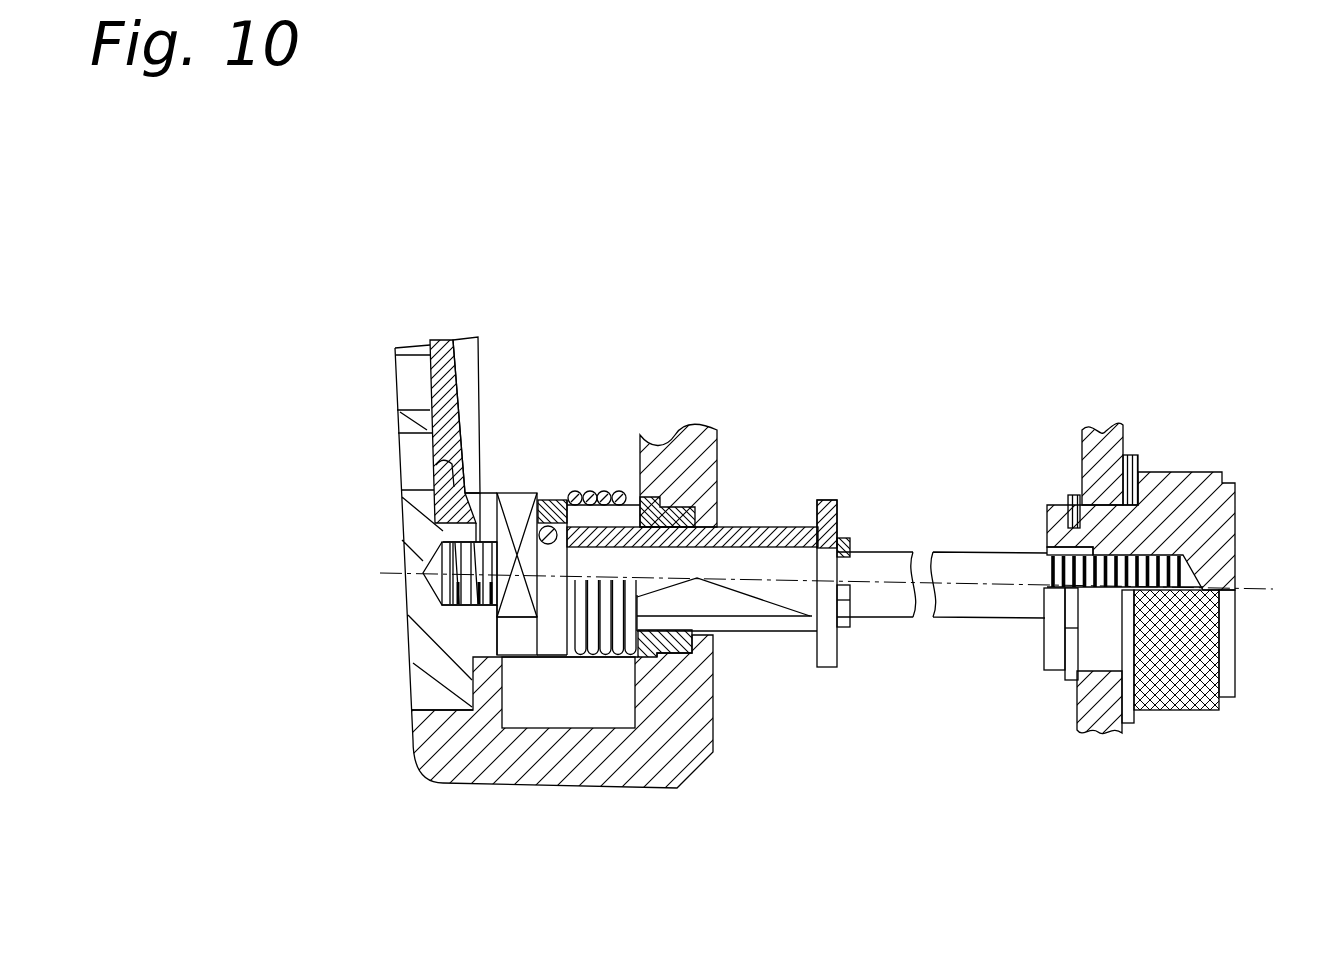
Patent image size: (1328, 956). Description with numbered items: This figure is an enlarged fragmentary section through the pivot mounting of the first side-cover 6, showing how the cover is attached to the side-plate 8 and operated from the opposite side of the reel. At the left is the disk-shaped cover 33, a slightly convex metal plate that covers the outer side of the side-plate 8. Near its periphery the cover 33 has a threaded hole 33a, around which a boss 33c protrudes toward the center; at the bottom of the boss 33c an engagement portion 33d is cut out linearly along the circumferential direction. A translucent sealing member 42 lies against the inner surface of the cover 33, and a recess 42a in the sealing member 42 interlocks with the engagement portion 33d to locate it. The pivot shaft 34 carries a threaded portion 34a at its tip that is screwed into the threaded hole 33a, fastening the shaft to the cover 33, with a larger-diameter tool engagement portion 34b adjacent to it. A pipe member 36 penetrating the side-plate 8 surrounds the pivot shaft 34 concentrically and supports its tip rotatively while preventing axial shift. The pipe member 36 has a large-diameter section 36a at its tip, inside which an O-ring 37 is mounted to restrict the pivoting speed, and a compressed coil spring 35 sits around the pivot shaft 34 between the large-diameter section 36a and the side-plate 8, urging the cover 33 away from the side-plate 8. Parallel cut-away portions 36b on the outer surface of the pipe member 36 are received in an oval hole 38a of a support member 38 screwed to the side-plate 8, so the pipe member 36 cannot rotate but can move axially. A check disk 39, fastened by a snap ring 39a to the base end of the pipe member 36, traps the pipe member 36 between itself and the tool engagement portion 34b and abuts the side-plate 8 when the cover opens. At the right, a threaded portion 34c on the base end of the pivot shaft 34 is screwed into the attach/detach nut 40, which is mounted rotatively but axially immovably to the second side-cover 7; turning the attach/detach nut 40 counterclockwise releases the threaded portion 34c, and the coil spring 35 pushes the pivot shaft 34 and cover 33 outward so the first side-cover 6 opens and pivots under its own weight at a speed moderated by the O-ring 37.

The first side-cover 6 is at (384, 534).
The second side-cover 7 is at (1112, 724).
The side-plate 8 is at (678, 447).
The cover 33 is at (423, 412).
The threaded hole 33a is at (475, 612).
The boss 33c is at (492, 512).
The engagement portion 33d is at (432, 464).
The pivot shaft 34 is at (986, 641).
The threaded portion 34a is at (488, 560).
The tool engagement portion 34b is at (516, 640).
The threaded portion 34c is at (1163, 573).
The coil spring 35 is at (593, 493).
The pipe member 36 is at (760, 520).
The large-diameter section 36a is at (557, 640).
The cut-away portions 36b is at (763, 610).
The O-ring 37 is at (550, 497).
The support member 38 is at (633, 642).
The oval hole 38a is at (657, 623).
The check disk 39 is at (828, 500).
The snap ring 39a is at (850, 547).
The attach/detach nut 40 is at (1190, 473).
The sealing member 42 is at (470, 362).
The recess 42a is at (422, 575).